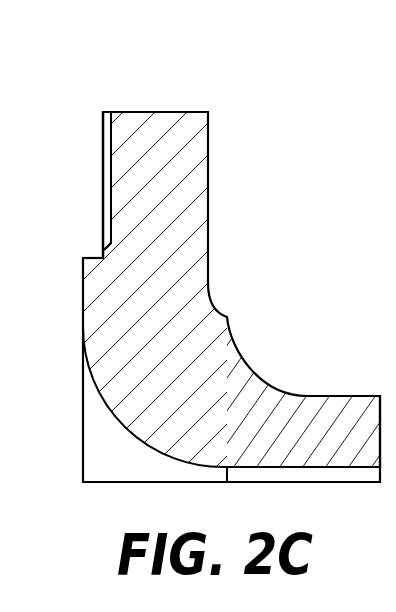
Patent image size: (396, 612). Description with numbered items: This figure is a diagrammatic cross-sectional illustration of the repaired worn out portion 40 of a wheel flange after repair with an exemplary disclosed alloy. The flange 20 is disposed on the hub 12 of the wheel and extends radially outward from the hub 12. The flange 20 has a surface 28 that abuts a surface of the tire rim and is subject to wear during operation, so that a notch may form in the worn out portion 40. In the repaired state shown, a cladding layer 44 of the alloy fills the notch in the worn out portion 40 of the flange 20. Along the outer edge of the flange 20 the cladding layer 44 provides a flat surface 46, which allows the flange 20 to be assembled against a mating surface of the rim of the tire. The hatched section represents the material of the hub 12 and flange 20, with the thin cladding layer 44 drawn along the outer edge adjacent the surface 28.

The hub 12 is at (338, 395).
The flange 20 is at (203, 148).
The surface 28 is at (114, 137).
The worn out portion 40 is at (88, 196).
The cladding layer 44 is at (105, 111).
The flat surface 46 is at (103, 152).